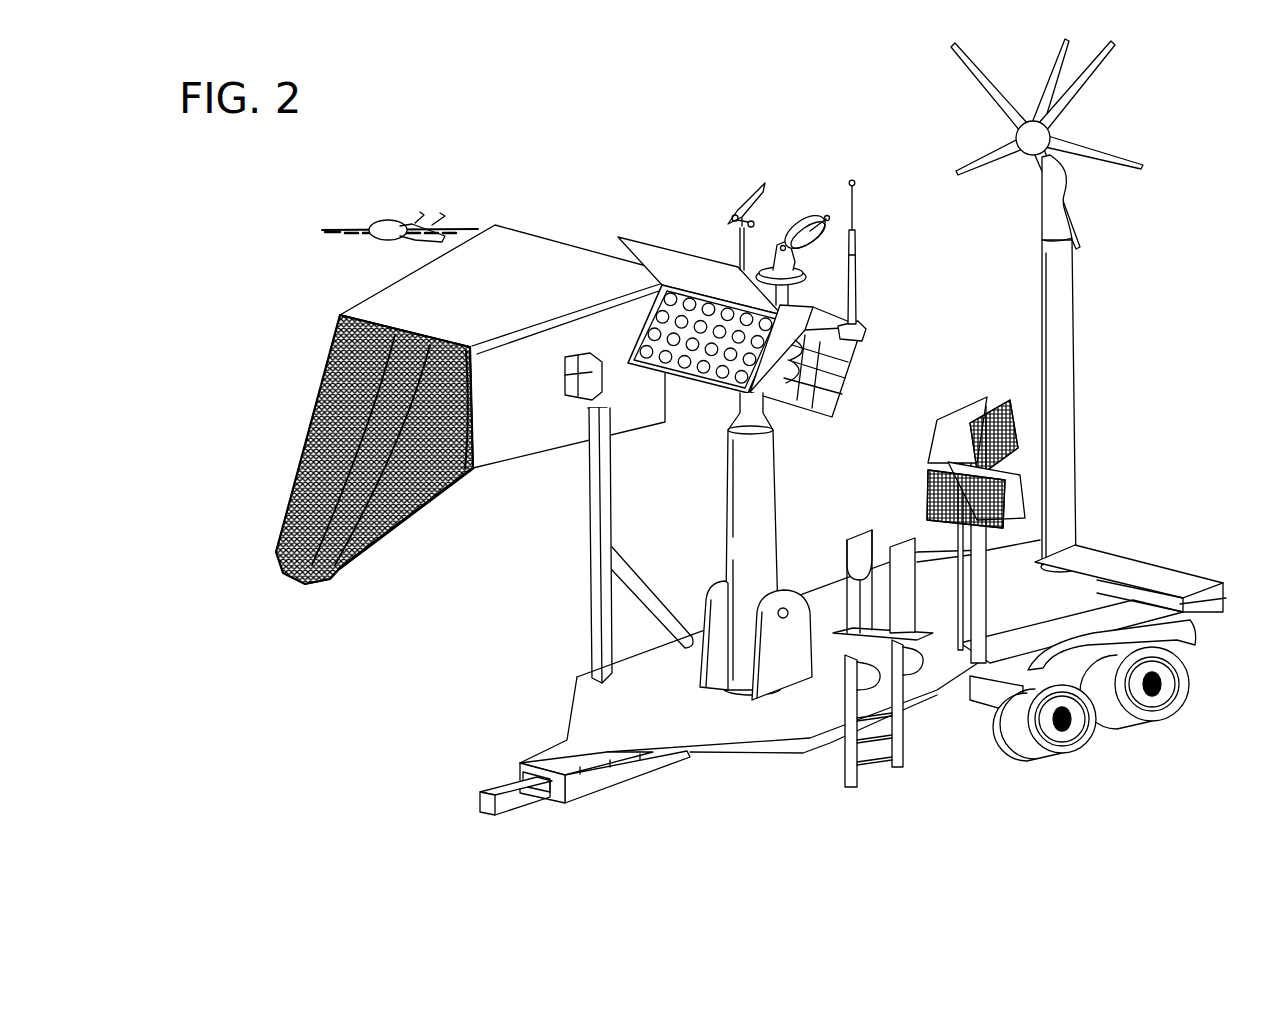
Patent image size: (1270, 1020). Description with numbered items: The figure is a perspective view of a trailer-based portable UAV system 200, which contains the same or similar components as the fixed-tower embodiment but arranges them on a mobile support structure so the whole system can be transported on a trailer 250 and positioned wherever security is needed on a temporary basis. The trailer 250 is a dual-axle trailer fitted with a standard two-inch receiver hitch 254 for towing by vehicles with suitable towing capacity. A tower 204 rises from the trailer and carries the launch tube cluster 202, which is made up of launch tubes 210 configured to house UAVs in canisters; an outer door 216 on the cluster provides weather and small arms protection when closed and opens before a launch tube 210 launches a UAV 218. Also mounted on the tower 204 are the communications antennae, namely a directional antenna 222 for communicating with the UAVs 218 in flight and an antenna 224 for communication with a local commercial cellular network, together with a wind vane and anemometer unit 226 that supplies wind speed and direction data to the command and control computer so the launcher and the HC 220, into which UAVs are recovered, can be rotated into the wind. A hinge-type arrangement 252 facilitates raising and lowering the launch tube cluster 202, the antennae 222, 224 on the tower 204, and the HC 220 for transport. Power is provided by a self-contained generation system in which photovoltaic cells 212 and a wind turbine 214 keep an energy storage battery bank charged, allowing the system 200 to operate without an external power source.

The UAV system 200 is at (312, 174).
The launch tube cluster 202 is at (842, 366).
The tower 204 is at (780, 508).
The launch tube 210 is at (828, 355).
The photovoltaic cells 212 is at (963, 600).
The wind turbine 214 is at (1078, 141).
The outer door 216 is at (677, 252).
The UAV 218 is at (383, 218).
The HC (recovery unit) 220 is at (566, 243).
The directional antenna 222 is at (802, 208).
The antenna 224 is at (858, 282).
The wind vane and anemometer unit 226 is at (742, 202).
The trailer 250 is at (1172, 573).
The hinge-type arrangement 252 is at (772, 673).
The receiver hitch 254 is at (482, 799).